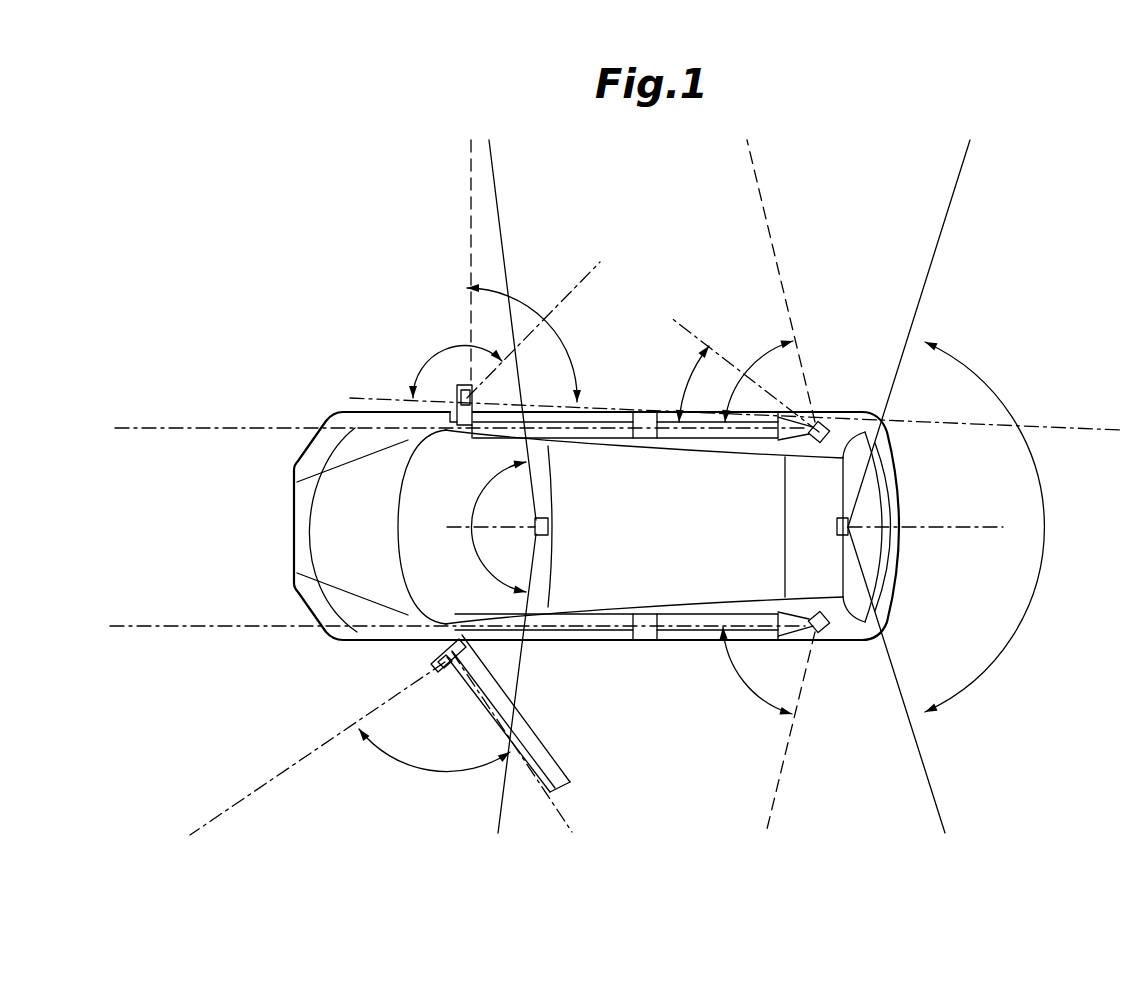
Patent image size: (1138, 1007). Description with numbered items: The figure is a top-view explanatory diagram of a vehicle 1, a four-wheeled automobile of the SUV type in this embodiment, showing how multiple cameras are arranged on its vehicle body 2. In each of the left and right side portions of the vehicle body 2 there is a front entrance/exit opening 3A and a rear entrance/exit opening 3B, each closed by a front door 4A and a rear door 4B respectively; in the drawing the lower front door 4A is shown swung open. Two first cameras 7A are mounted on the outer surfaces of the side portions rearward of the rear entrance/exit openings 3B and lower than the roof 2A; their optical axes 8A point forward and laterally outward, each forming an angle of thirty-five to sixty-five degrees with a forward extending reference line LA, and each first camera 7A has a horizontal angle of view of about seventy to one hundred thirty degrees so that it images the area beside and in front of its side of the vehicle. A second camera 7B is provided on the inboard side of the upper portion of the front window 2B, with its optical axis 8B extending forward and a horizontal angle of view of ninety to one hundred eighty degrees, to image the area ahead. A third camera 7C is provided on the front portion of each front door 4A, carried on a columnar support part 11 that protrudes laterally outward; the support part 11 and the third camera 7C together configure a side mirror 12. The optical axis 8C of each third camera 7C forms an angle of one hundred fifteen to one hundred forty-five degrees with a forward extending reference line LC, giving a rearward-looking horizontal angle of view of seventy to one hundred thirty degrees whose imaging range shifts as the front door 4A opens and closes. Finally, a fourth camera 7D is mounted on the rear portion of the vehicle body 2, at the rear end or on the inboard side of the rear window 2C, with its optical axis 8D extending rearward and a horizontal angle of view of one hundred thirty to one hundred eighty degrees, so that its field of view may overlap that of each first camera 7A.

The vehicle 1 is at (548, 526).
The vehicle body 2 is at (322, 533).
The roof 2A is at (643, 588).
The front window 2B is at (413, 573).
The rear window 2C is at (865, 540).
The front entrance/exit opening 3A is at (567, 641).
The rear entrance/exit opening 3B is at (680, 642).
The front door 4A is at (562, 788).
The rear door 4B is at (665, 641).
The first camera 7A is at (825, 423).
The second camera 7B is at (549, 527).
The third camera 7C is at (465, 385).
The fourth camera 7D is at (837, 527).
The optical axis of first camera 8A is at (734, 360).
The optical axis of second camera 8B is at (471, 525).
The optical axis of third camera 8C is at (410, 542).
The optical axis of fourth camera 8D is at (945, 524).
The support part 11 is at (432, 665).
The side mirror 12 is at (438, 676).
The reference line LA is at (445, 522).
The reference line LC is at (719, 405).